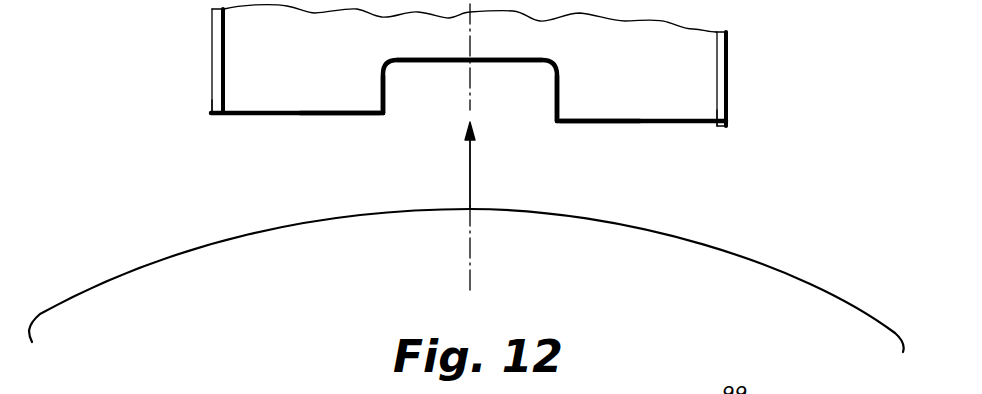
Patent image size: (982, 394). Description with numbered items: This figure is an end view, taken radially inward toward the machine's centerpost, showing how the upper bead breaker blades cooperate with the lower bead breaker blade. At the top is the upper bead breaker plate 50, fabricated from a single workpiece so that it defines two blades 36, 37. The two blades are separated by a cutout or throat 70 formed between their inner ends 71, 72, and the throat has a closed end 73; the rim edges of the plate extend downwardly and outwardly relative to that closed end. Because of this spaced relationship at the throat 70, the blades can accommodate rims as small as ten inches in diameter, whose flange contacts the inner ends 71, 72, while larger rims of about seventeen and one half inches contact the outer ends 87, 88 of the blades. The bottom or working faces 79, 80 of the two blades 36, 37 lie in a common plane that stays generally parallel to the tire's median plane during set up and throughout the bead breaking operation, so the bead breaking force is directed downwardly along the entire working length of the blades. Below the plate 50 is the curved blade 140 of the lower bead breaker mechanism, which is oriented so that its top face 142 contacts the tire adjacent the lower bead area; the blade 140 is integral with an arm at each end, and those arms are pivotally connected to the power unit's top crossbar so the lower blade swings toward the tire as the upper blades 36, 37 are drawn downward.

The upper bead breaker plate 50 is at (262, 24).
The upper bead breaker blade 36 is at (286, 105).
The upper bead breaker blade 37 is at (647, 108).
The throat 70 is at (497, 81).
The inner end of blade 71 is at (384, 119).
The inner end of blade 72 is at (558, 124).
The closed end of the throat 73 is at (446, 60).
The working face 79 is at (316, 116).
The working face 80 is at (630, 124).
The outer end of blade 87 is at (213, 116).
The outer end of blade 88 is at (722, 127).
The curved blade 140 is at (362, 211).
The top face 142 is at (483, 208).